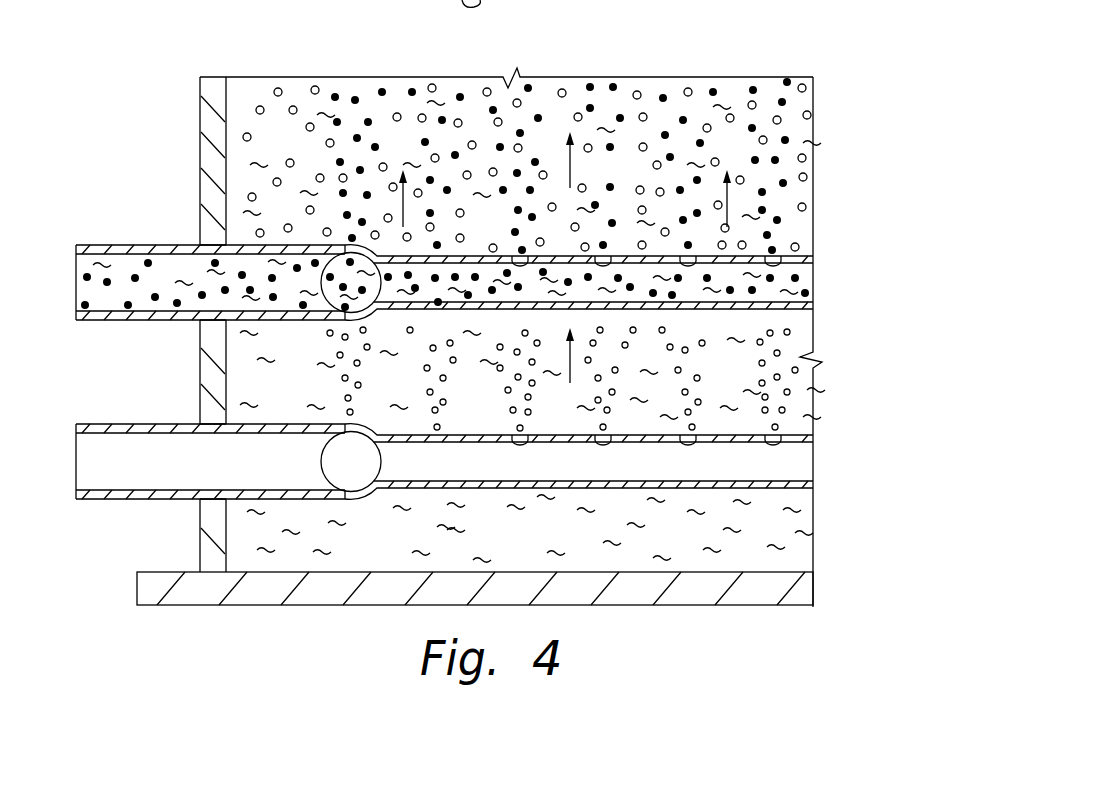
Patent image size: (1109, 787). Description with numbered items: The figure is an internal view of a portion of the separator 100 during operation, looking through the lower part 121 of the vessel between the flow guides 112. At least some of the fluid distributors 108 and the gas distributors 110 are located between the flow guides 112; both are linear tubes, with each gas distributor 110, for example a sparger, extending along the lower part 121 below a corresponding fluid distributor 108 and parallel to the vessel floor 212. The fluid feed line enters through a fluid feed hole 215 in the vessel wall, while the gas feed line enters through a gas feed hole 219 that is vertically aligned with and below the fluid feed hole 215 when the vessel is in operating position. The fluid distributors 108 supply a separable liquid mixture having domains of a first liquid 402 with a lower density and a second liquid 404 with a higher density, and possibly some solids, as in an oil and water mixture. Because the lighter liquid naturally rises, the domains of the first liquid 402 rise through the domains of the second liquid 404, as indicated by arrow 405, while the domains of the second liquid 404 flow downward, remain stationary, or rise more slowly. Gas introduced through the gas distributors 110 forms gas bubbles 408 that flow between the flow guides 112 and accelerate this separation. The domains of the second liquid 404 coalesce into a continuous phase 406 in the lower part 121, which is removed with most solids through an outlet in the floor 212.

The separator 100 is at (805, 35).
The flow guides 112 is at (287, 131).
The second liquid 404 is at (118, 263).
The first liquid 402 is at (172, 265).
The arrow 405 is at (575, 167).
The fluid distributors 108 is at (472, 257).
The fluid feed hole 215 is at (204, 321).
The gas bubbles 408 is at (798, 348).
The gas distributors 110 is at (464, 436).
The gas feed hole 219 is at (204, 500).
The vessel floor 212 is at (362, 570).
The continuous phase 406 is at (510, 544).
The lower part 121 is at (838, 567).